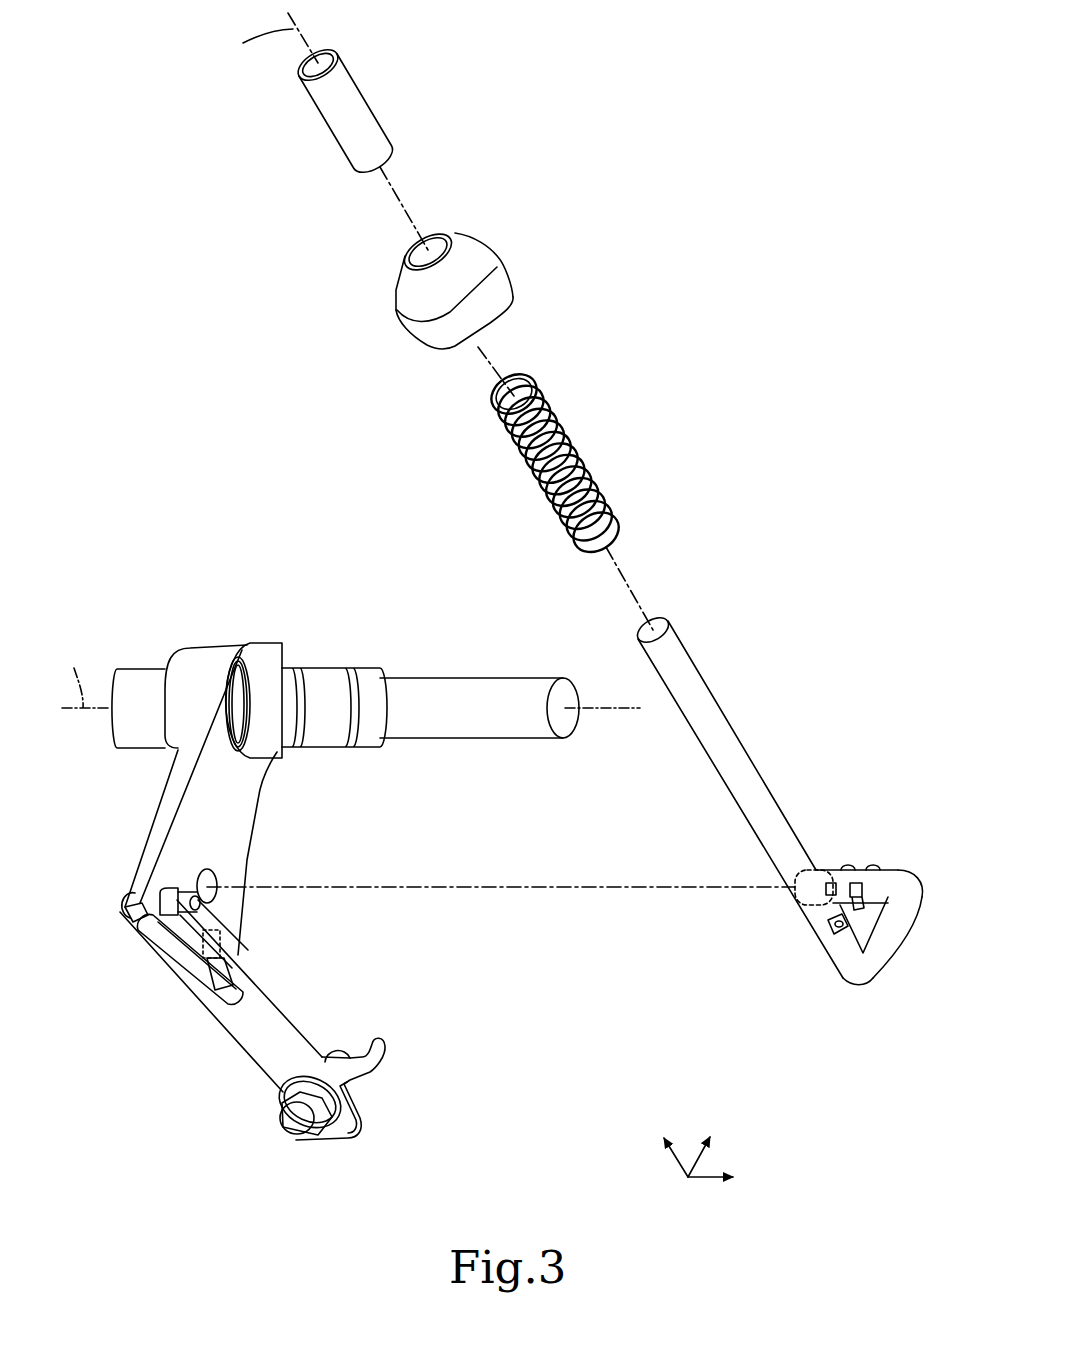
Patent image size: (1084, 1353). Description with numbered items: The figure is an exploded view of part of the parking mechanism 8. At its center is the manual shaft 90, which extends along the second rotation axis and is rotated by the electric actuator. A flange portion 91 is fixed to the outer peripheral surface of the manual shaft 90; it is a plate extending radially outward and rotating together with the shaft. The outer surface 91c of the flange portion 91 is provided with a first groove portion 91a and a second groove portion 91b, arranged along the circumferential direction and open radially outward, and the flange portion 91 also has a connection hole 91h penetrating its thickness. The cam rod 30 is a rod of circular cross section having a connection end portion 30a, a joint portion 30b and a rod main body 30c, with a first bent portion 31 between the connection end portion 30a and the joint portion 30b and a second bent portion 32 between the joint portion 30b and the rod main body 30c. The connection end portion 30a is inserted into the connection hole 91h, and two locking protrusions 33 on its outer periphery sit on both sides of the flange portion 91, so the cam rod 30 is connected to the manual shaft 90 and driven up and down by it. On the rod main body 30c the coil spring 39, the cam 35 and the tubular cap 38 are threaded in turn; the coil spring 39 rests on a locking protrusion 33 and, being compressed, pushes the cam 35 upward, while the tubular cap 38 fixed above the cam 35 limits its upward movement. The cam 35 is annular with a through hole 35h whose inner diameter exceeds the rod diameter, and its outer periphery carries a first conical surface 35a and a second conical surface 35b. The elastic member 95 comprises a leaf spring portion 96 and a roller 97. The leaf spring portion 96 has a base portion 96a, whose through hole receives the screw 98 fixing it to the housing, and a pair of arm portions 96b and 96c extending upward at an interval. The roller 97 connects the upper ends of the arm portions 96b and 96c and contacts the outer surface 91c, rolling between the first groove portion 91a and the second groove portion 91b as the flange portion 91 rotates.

The parking mechanism 8 is at (765, 110).
The cam rod 30 is at (903, 857).
The connection end portion 30a is at (860, 875).
The joint portion 30b is at (890, 933).
The rod main body 30c is at (708, 703).
The first bent portion 31 is at (913, 887).
The second bent portion 32 is at (867, 977).
The locking protrusions 33 is at (845, 867).
The cam 35 is at (508, 258).
The first conical surface 35a is at (508, 286).
The second conical surface 35b is at (470, 247).
The through hole 35h is at (437, 248).
The tubular cap 38 is at (354, 102).
The coil spring 39 is at (586, 452).
The manual shaft 90 is at (147, 665).
The flange portion 91 is at (163, 790).
The first groove portion 91a is at (228, 952).
The second groove portion 91b is at (160, 907).
The outer surface 91c is at (132, 918).
The connection hole 91h is at (217, 879).
The elastic member 95 is at (253, 1067).
The leaf spring portion 96 is at (273, 1077).
The base portion 96a is at (343, 1140).
The arm portion 96b is at (242, 978).
The arm portion 96c is at (187, 978).
The roller 97 is at (165, 915).
The screw 98 is at (298, 1130).